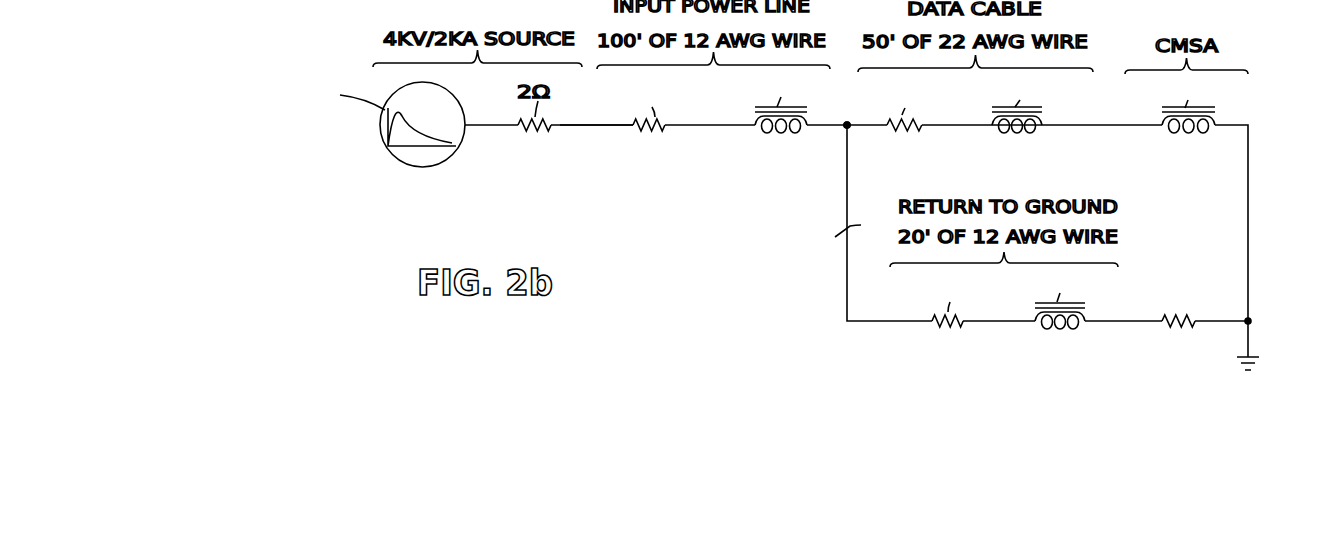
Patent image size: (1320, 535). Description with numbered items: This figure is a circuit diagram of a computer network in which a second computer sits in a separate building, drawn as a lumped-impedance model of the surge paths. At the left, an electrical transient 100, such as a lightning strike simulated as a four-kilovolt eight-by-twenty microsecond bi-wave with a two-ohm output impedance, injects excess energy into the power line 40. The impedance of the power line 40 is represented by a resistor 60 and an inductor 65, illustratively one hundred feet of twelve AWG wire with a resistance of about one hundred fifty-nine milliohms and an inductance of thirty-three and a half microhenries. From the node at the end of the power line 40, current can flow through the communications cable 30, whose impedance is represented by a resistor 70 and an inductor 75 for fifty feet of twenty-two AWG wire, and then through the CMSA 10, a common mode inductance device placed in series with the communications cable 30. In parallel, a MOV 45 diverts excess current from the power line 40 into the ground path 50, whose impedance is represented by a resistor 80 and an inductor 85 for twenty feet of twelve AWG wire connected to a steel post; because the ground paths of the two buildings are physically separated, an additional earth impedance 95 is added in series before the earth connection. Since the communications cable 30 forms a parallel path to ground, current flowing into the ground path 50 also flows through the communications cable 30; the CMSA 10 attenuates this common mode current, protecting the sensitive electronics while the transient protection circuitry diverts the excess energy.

The electrical transient 100 is at (437, 173).
The power line 40 is at (598, 128).
The resistor 60 is at (652, 133).
The inductor 65 is at (782, 130).
The communications cable 30 is at (867, 130).
The resistor 70 is at (908, 133).
The inductor 75 is at (1022, 133).
The CMSA 10 is at (1188, 137).
The MOV 45 is at (835, 245).
The resistor 80 is at (948, 327).
The inductor 85 is at (1060, 327).
The earth impedance 95 is at (1175, 315).
The ground path 50 is at (1248, 345).